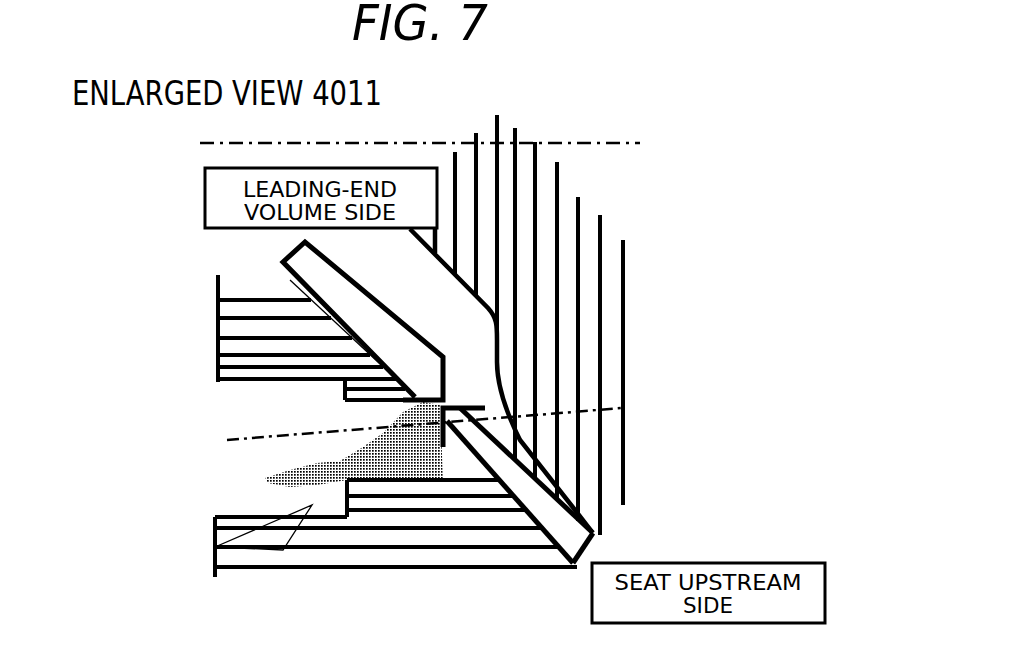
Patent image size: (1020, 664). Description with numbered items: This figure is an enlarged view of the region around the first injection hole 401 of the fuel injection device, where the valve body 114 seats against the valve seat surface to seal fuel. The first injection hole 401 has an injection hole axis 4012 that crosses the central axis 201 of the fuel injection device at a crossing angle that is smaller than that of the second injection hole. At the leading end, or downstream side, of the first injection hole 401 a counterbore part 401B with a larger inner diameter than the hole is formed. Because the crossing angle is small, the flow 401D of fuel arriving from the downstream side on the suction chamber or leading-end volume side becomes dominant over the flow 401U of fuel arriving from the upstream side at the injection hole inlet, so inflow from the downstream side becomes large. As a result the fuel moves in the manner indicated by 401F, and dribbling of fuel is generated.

The central axis 201 is at (577, 143).
The valve body 114 is at (603, 353).
The first injection hole 401 is at (367, 418).
The counterbore part 401B is at (258, 388).
The flow of fuel from downstream side 401D is at (370, 327).
The flow of fuel from upstream side 401U is at (490, 442).
The flow of fuel 401F is at (423, 453).
The injection hole axis 4012 is at (213, 442).